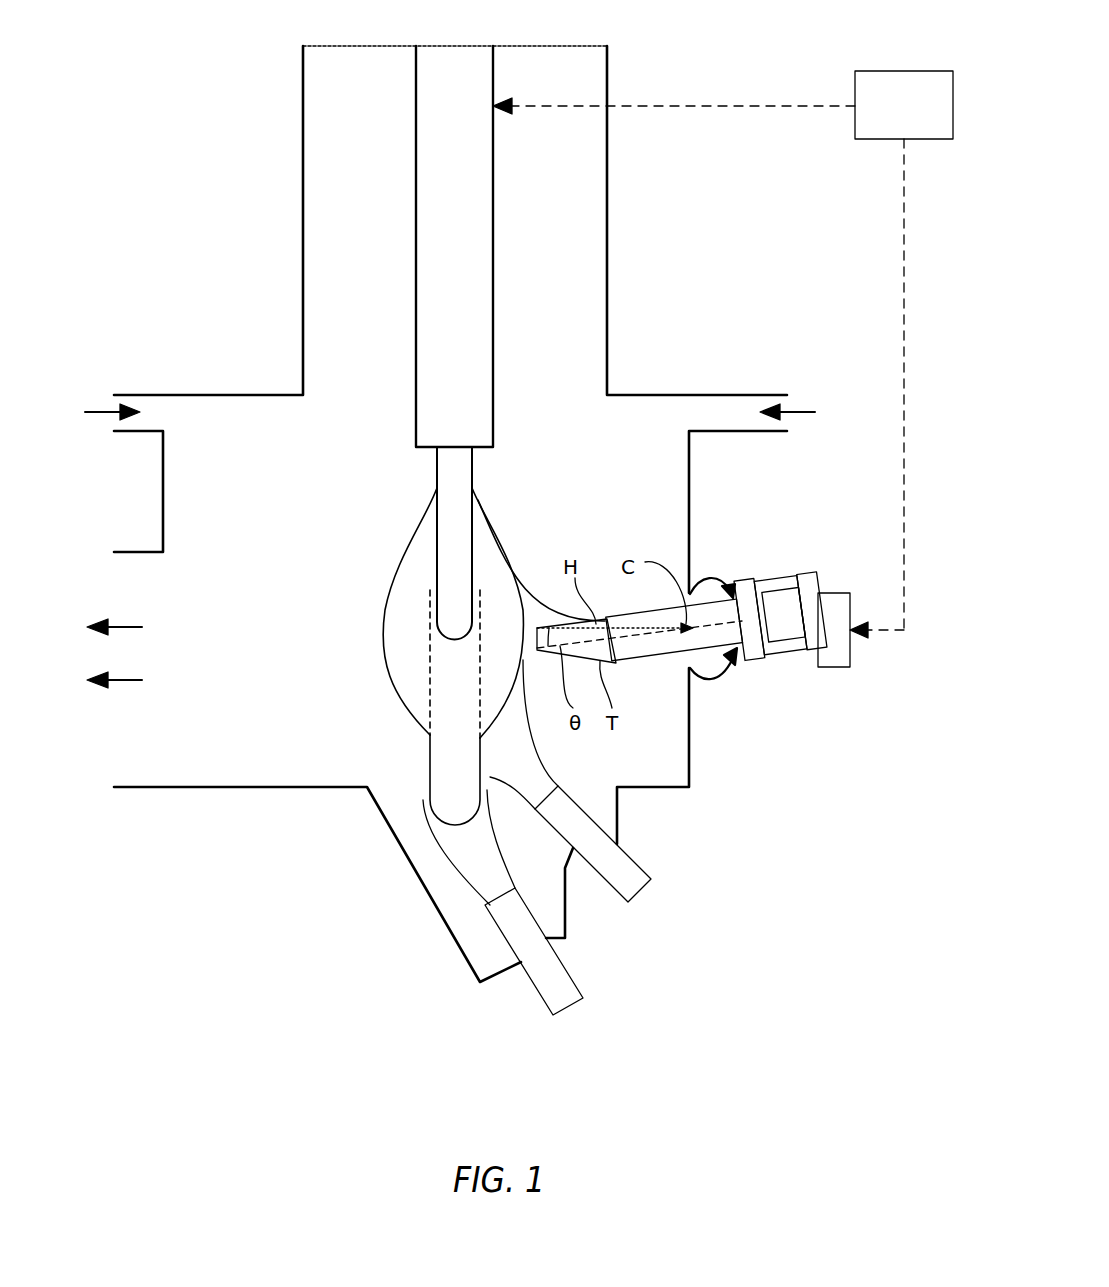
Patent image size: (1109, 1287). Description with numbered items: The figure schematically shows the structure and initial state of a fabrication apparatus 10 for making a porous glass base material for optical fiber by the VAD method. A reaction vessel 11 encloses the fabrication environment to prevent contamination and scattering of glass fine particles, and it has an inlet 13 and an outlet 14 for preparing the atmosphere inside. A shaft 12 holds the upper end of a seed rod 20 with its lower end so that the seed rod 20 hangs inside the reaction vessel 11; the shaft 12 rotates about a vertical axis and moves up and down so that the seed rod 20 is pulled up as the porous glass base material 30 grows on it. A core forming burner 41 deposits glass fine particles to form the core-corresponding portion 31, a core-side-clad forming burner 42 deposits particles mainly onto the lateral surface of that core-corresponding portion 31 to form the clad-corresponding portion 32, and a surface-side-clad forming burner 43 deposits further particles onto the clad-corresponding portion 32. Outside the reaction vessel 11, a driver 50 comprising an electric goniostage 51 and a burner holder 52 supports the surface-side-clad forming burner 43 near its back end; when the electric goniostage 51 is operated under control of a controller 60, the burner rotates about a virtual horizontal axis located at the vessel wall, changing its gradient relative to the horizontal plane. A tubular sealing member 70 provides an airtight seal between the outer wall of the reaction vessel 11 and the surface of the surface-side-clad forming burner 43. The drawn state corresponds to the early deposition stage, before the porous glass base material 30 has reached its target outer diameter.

The fabrication apparatus 10 is at (75, 202).
The reaction vessel 11 is at (607, 148).
The shaft 12 is at (493, 148).
The inlet 13 is at (118, 428).
The outlet 14 is at (114, 780).
The seed rod 20 is at (437, 466).
The porous glass base material 30 is at (272, 697).
The core-corresponding portion 31 is at (430, 768).
The clad-corresponding portion 32 is at (385, 714).
The core forming burner 41 is at (575, 1010).
The core-side-clad forming burner 42 is at (645, 890).
The surface-side-clad forming burner 43 is at (663, 664).
The driver 50 is at (795, 651).
The electric goniostage 51 is at (826, 592).
The burner holder 52 is at (770, 660).
The controller 60 is at (880, 139).
The sealing member 70 is at (702, 588).